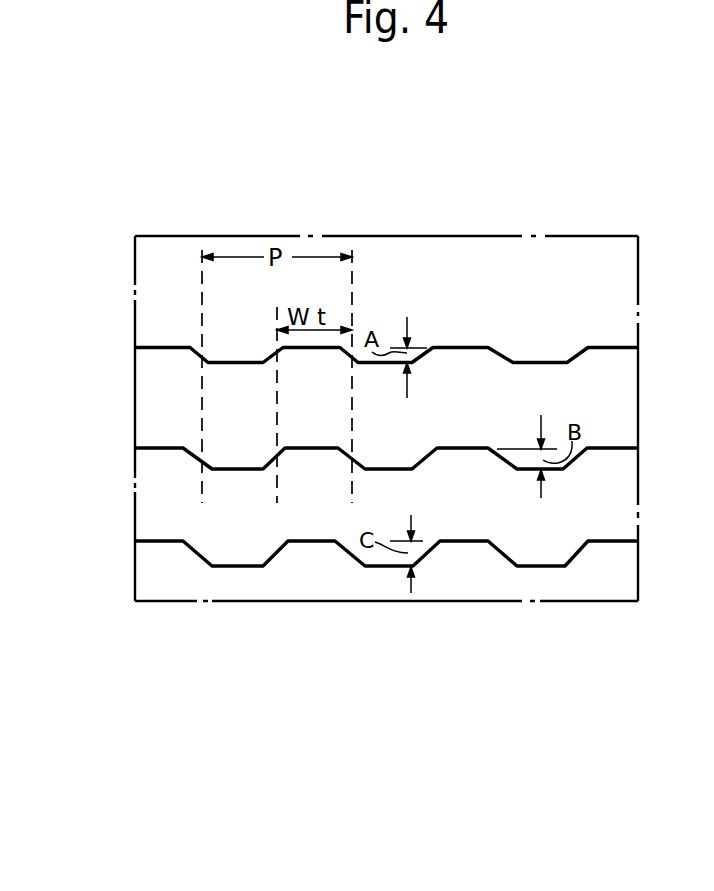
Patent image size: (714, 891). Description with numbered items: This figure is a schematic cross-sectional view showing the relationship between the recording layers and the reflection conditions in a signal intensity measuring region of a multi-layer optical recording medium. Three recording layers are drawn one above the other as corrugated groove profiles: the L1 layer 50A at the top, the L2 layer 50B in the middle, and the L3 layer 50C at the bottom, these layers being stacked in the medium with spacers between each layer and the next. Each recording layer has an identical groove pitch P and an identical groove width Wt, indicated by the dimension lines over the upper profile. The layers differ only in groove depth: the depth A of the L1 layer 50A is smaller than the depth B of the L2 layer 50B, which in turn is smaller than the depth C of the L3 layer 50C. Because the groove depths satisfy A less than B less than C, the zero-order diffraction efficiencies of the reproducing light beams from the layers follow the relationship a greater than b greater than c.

The L1 layer 50A is at (165, 346).
The L2 layer 50B is at (156, 447).
The L3 layer 50C is at (152, 540).